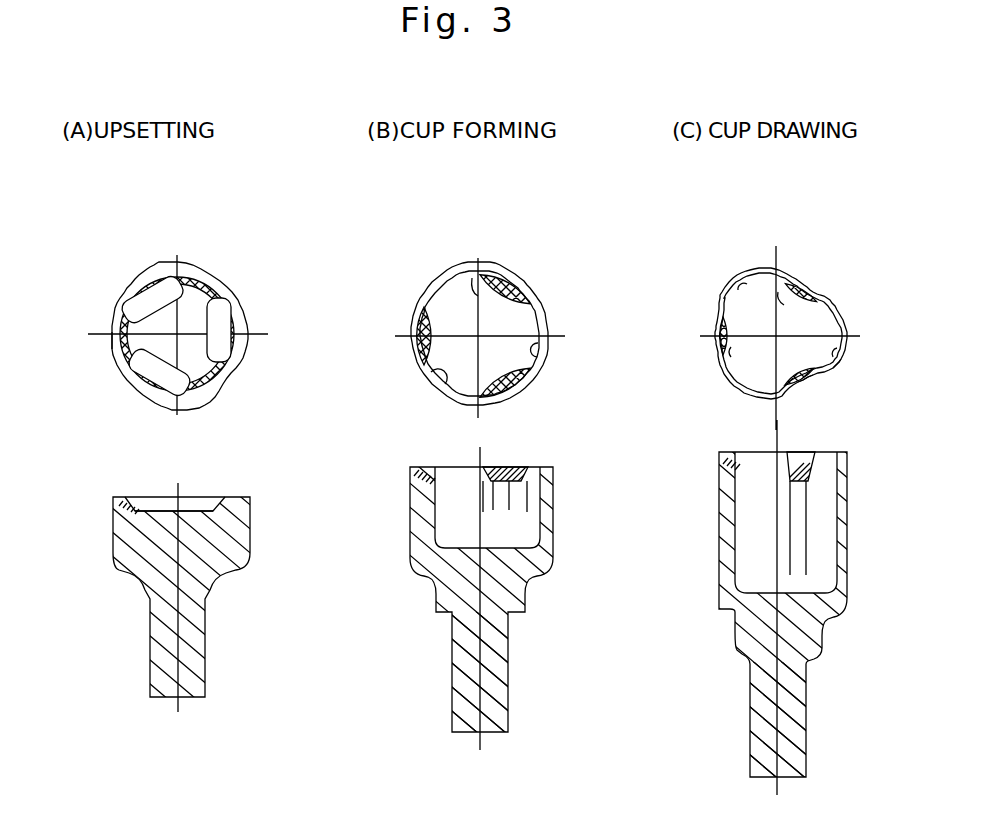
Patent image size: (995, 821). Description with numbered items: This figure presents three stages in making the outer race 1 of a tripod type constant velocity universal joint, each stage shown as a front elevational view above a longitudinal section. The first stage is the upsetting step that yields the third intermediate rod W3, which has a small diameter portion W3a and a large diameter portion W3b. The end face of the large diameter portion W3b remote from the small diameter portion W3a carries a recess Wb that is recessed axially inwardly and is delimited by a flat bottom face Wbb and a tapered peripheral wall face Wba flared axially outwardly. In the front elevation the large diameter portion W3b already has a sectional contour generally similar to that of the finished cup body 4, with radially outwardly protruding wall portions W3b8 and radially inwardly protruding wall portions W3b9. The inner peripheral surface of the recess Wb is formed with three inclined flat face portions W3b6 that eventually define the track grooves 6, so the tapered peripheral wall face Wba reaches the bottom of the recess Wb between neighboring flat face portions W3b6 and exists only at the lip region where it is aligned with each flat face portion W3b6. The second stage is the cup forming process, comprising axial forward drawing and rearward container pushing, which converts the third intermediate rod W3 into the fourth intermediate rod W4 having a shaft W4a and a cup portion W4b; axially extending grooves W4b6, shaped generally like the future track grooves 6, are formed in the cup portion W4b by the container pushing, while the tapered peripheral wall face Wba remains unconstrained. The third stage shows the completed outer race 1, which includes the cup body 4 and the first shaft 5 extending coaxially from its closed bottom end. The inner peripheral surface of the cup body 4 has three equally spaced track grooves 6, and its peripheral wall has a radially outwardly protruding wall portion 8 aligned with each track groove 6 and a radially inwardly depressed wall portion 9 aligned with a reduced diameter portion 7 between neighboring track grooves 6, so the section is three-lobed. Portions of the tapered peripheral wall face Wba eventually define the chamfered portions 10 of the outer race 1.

The third intermediate rod W3 is at (141, 246).
The small diameter portion W3a is at (200, 675).
The large diameter portion W3b is at (240, 545).
The inclined flat face portions W3b6 is at (222, 330).
The radially outwardly protruding wall portions W3b8 is at (127, 285).
The radially inwardly protruding wall portions W3b9 is at (113, 352).
The recess Wb is at (196, 305).
The tapered peripheral wall face Wba is at (122, 330).
The flat bottom face Wbb is at (205, 506).
The fourth intermediate rod W4 is at (425, 238).
The shaft W4a is at (505, 695).
The cup portion W4b is at (548, 318).
The axially extending grooves W4b6 is at (532, 348).
The outer race 1 is at (730, 238).
The cup body 4 is at (845, 315).
The first shaft 5 is at (800, 732).
The track grooves 6 is at (740, 288).
The reduced diameter portion 7 is at (478, 294).
The radially outwardly protruding wall portion 8 is at (836, 366).
The radially inwardly depressed wall portion 9 is at (806, 382).
The chamfered portions 10 is at (800, 290).